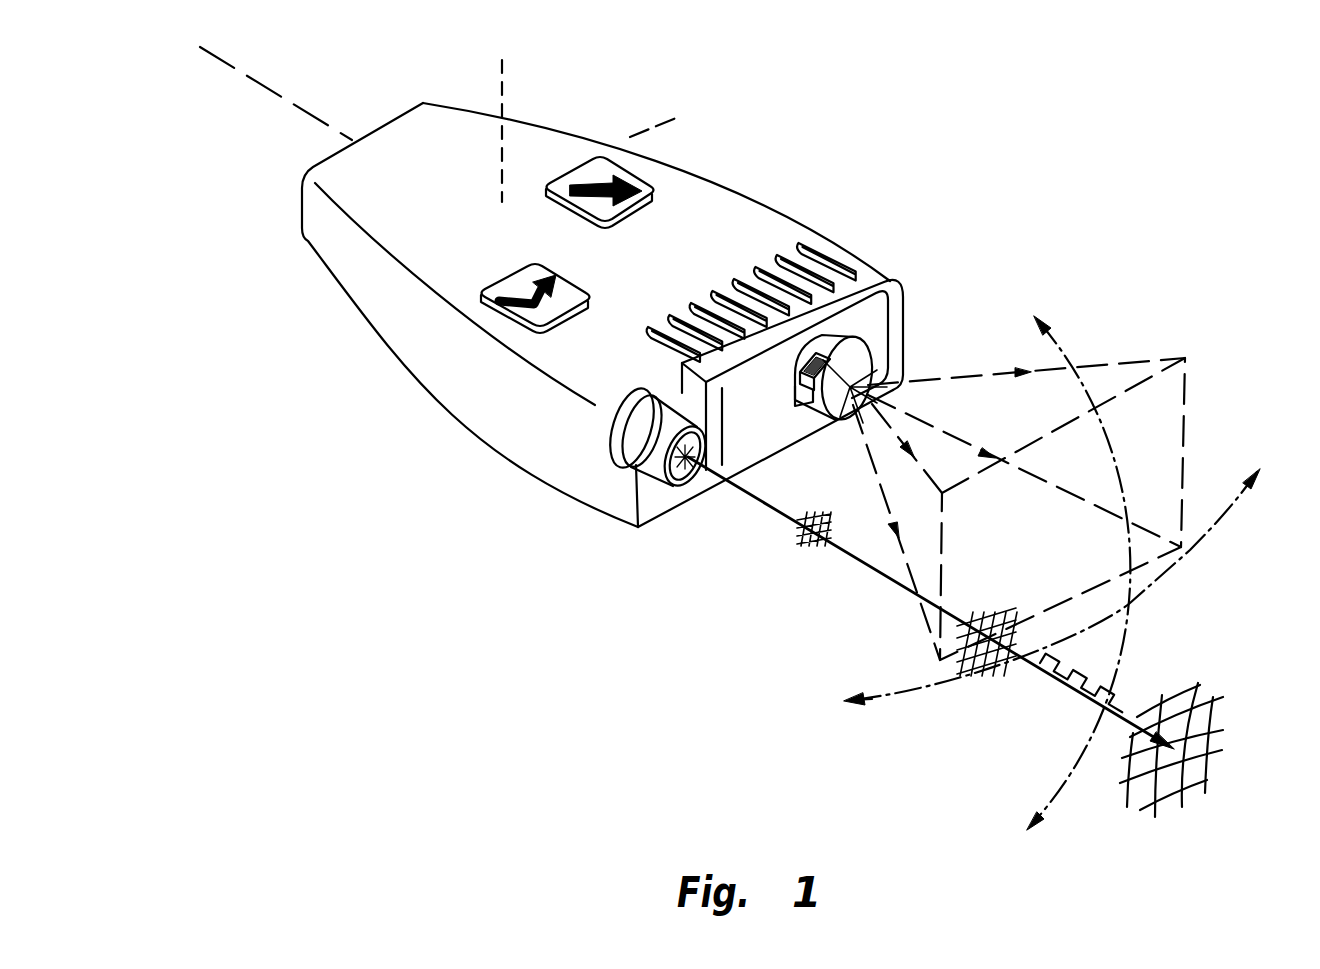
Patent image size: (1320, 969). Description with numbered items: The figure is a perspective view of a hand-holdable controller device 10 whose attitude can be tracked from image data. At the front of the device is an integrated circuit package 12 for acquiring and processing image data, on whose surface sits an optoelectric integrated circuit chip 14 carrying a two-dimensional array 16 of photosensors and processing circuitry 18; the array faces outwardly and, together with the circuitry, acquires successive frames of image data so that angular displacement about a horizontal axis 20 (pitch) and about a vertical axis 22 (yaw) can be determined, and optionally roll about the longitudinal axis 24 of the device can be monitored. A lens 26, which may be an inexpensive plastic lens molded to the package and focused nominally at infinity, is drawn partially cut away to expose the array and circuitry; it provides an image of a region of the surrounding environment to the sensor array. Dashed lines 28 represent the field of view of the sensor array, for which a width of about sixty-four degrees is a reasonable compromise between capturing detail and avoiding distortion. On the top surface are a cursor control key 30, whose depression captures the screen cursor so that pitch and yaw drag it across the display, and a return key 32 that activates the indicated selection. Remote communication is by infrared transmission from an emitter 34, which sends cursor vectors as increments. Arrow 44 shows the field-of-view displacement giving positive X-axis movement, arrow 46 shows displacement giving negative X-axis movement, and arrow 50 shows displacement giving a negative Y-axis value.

The hand-holdable controller device 10 is at (395, 318).
The integrated circuit package 12 is at (906, 322).
The optoelectric integrated circuit chip 14 is at (800, 366).
The two-dimensional array of photosensors 16 is at (862, 348).
The processing circuitry 18 is at (794, 386).
The horizontal axis 20 is at (676, 118).
The vertical axis 22 is at (502, 58).
The longitudinal axis 24 is at (330, 80).
The lens 26 is at (868, 366).
The field of view 28 is at (1181, 402).
The cursor control key 30 is at (652, 185).
The return key 32 is at (507, 284).
The emitter 34 is at (651, 463).
The arrow 44 is at (1232, 503).
The arrow 46 is at (897, 693).
The arrow 50 is at (1062, 786).